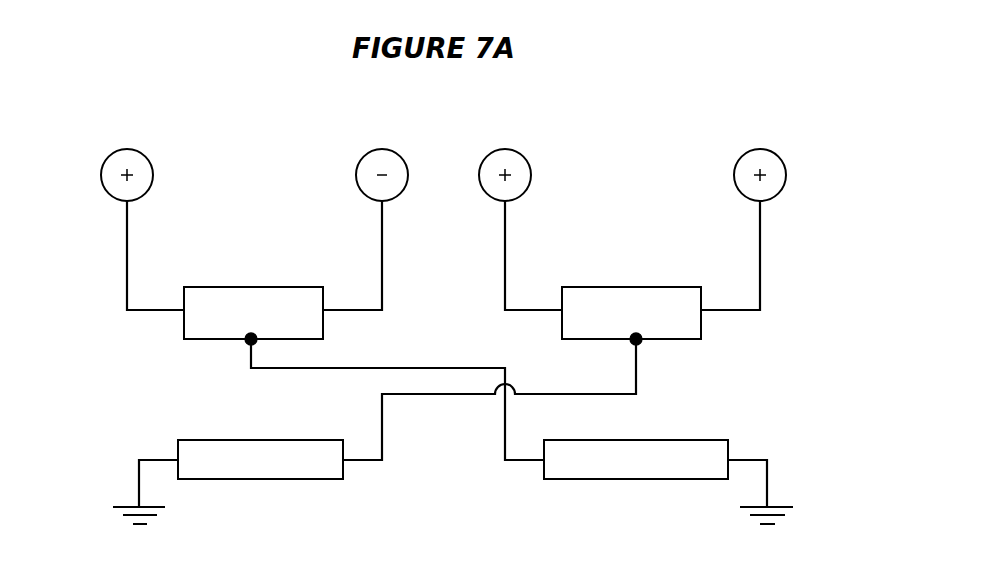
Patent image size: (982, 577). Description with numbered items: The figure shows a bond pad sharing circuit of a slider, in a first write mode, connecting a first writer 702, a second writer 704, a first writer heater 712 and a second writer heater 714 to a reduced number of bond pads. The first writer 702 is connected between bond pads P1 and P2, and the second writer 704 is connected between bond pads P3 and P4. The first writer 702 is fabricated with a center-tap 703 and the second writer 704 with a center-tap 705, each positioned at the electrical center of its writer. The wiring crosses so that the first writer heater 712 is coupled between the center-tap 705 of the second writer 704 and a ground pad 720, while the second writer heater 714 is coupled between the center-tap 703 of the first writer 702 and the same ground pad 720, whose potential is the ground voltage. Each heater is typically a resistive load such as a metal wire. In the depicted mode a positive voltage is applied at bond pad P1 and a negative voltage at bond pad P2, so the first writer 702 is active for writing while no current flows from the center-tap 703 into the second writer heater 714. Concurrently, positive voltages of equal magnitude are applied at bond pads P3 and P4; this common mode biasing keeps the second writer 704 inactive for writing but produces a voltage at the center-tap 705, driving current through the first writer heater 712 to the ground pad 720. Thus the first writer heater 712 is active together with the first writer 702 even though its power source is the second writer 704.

The first writer 702 is at (235, 287).
The center-tap 703 is at (247, 343).
The second writer 704 is at (652, 287).
The center-tap 705 is at (640, 344).
The first writer heater 712 is at (223, 440).
The second writer heater 714 is at (683, 440).
The ground pad 720 is at (124, 515).
The bond pad P1 is at (153, 175).
The bond pad P2 is at (356, 175).
The bond pad P3 is at (531, 175).
The bond pad P4 is at (734, 175).